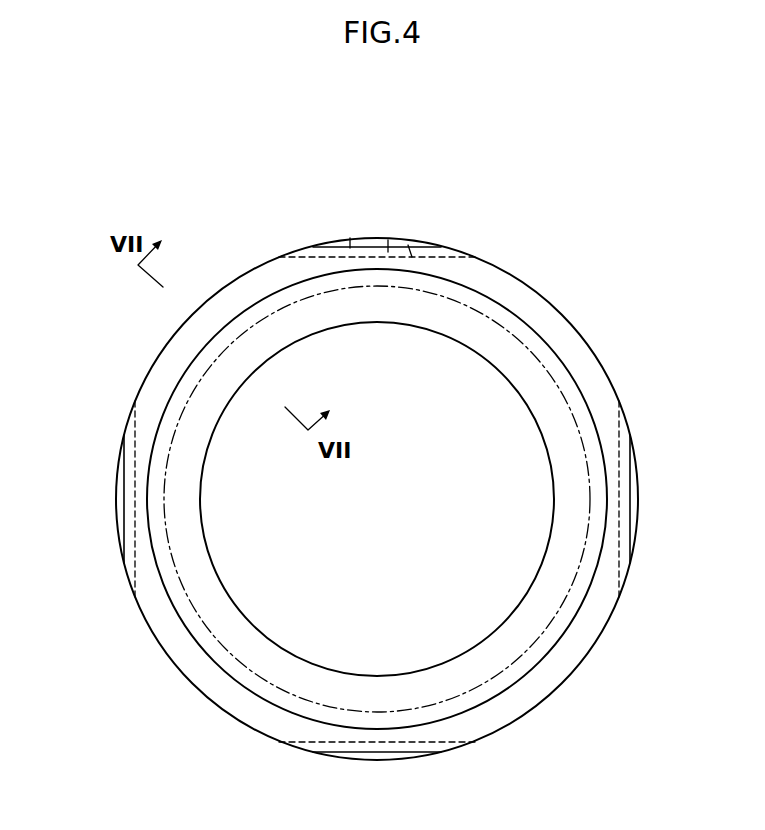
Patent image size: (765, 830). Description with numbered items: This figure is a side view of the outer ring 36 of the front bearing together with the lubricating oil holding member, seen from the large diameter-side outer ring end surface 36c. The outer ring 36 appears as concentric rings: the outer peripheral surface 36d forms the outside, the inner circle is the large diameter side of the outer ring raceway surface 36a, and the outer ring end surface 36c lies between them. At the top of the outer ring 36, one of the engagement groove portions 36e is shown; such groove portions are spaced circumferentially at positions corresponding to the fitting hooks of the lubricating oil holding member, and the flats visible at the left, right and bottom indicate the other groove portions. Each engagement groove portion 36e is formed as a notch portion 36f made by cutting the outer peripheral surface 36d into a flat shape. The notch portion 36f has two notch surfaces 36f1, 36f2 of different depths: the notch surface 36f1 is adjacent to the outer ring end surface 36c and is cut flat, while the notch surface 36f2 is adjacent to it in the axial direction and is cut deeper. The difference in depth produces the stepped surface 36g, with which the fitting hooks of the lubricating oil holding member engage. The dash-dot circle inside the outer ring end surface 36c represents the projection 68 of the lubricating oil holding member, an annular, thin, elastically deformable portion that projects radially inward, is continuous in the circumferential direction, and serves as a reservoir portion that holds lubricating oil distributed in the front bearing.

The outer ring 36 is at (607, 369).
The outer ring raceway surface 36a is at (565, 427).
The outer ring end surface 36c is at (565, 333).
The outer peripheral surface 36d is at (540, 295).
The engagement groove portion 36e is at (417, 240).
The notch portion 36f is at (452, 163).
The notch surface 36f1 is at (350, 238).
The notch surface 36f2 is at (390, 238).
The stepped surface 36g is at (335, 240).
The projection 68 is at (192, 378).